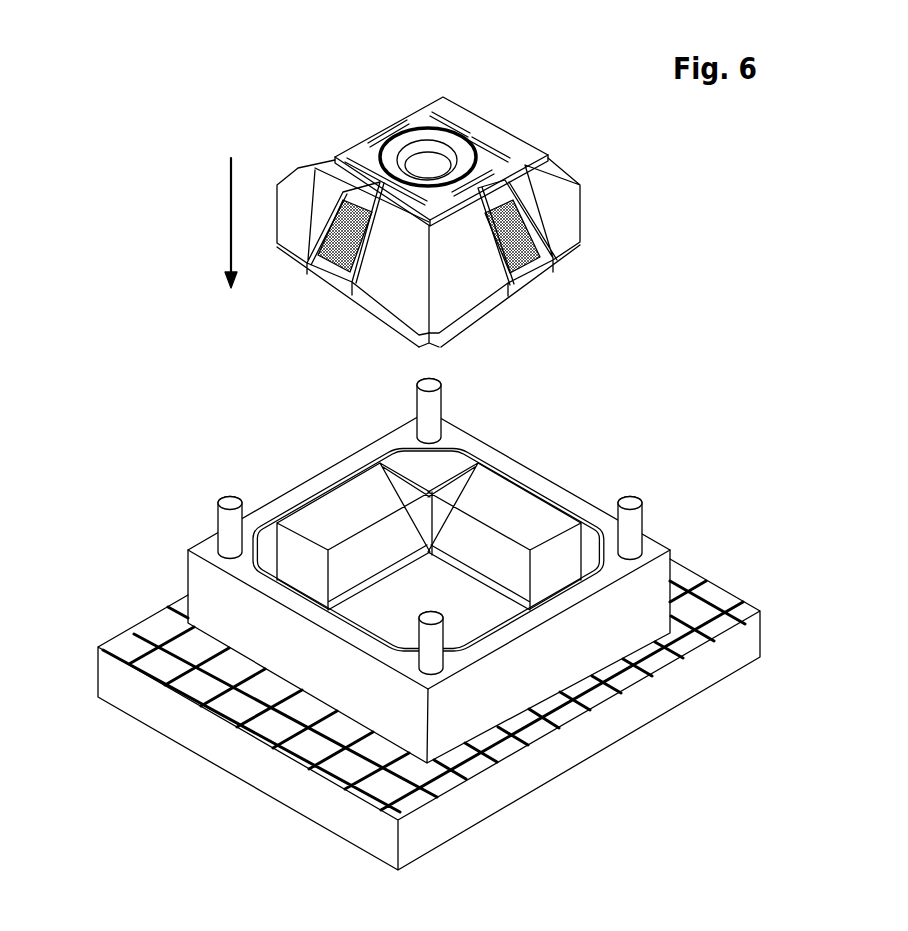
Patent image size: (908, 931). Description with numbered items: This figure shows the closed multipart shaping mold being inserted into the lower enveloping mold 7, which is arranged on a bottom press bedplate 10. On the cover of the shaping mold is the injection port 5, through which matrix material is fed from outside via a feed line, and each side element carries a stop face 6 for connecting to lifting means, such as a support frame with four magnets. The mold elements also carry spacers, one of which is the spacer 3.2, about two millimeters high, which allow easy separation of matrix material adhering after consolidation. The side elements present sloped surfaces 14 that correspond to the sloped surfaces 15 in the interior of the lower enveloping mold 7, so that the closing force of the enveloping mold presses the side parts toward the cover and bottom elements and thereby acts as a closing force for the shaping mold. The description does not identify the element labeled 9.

The spacer 3.2 is at (362, 165).
The injection port 5 is at (463, 143).
The sloped surfaces 14 is at (548, 220).
The stop faces 6 is at (510, 253).
The cavity 9 is at (555, 490).
The lower enveloping mold 7 is at (648, 592).
The sloped surfaces 15 is at (514, 528).
The bottom press bedplate 10 is at (612, 733).